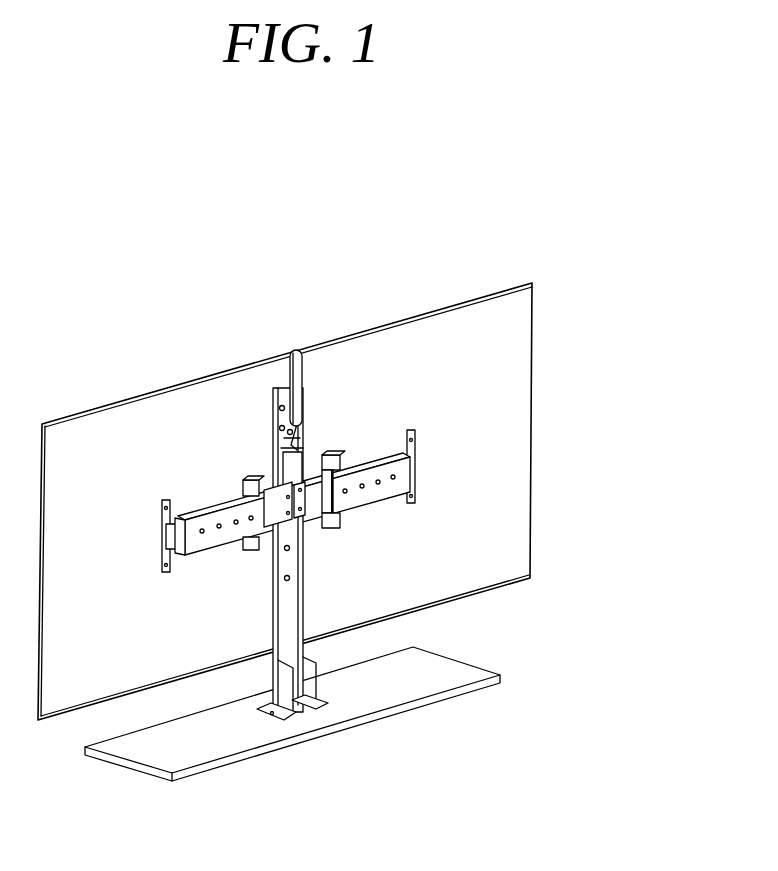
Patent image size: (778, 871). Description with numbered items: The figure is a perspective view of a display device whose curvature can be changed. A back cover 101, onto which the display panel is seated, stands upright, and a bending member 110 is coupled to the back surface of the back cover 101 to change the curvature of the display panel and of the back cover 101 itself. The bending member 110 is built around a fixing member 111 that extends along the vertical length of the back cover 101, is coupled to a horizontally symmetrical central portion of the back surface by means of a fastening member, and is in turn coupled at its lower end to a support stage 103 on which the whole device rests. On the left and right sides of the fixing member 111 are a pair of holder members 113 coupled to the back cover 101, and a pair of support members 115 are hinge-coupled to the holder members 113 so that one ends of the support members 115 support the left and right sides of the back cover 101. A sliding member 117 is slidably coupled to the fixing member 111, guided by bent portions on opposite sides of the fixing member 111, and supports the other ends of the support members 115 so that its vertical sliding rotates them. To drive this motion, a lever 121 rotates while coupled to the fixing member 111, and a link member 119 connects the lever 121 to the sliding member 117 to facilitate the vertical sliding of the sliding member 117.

The back cover 101 is at (515, 346).
The support stage 103 is at (217, 747).
The bending member 110 is at (186, 483).
The fixing member 111 is at (293, 622).
The holder members 113 is at (337, 527).
The support members 115 is at (385, 490).
The sliding member 117 is at (276, 468).
The link member 119 is at (305, 428).
The lever 121 is at (300, 362).